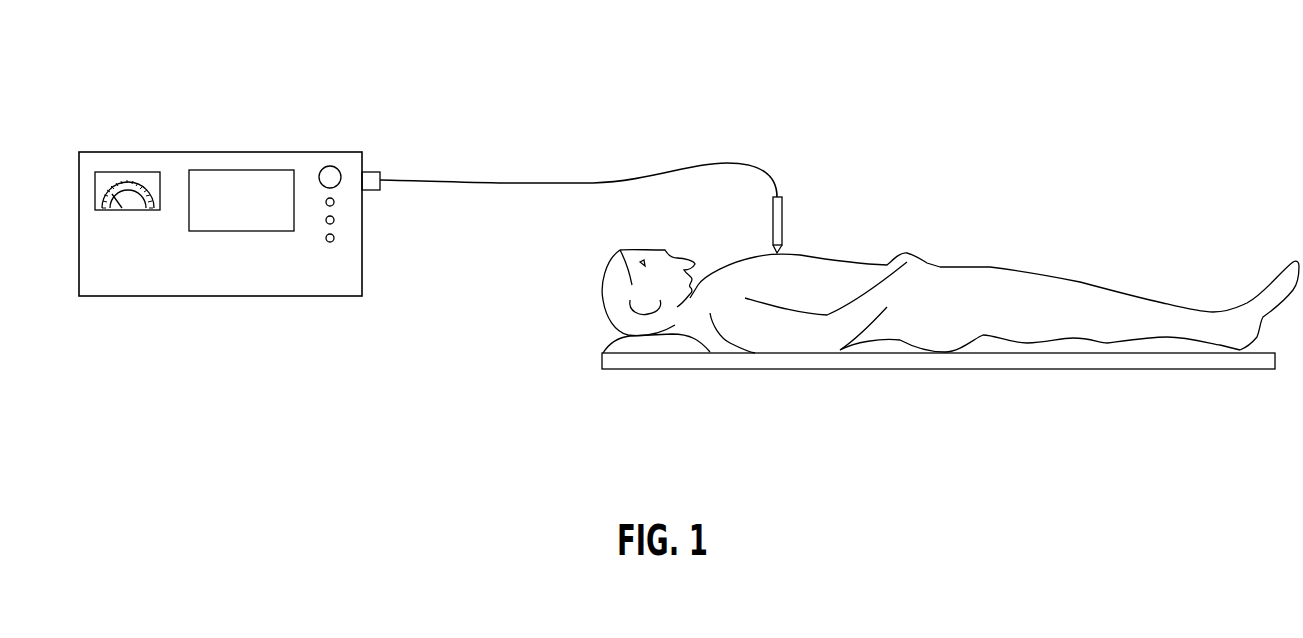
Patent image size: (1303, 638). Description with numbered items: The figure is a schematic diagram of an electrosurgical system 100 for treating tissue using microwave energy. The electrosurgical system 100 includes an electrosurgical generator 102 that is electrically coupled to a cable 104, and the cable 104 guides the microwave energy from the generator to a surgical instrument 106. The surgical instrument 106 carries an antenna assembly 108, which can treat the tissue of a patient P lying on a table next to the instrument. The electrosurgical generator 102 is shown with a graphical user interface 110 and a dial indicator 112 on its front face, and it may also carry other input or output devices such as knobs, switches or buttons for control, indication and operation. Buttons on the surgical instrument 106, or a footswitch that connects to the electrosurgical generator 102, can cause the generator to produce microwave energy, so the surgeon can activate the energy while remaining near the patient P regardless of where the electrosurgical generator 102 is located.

The electrosurgical system 100 is at (920, 73).
The electrosurgical generator 102 is at (220, 152).
The cable 104 is at (632, 177).
The surgical instrument 106 is at (783, 210).
The antenna assembly 108 is at (785, 248).
The graphical user interface 110 is at (242, 231).
The dial indicator 112 is at (113, 172).
The patient P is at (1012, 252).